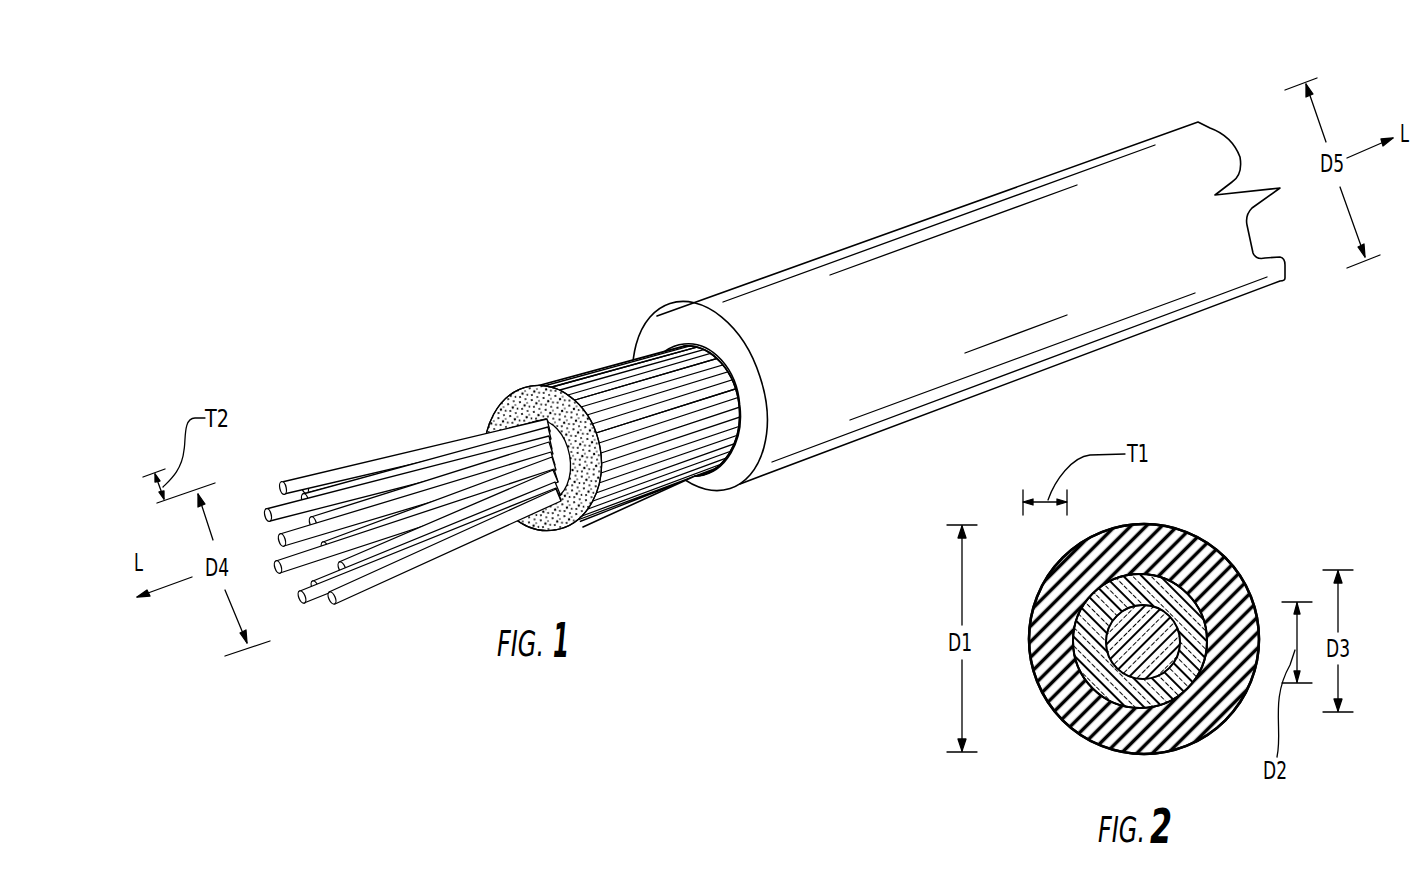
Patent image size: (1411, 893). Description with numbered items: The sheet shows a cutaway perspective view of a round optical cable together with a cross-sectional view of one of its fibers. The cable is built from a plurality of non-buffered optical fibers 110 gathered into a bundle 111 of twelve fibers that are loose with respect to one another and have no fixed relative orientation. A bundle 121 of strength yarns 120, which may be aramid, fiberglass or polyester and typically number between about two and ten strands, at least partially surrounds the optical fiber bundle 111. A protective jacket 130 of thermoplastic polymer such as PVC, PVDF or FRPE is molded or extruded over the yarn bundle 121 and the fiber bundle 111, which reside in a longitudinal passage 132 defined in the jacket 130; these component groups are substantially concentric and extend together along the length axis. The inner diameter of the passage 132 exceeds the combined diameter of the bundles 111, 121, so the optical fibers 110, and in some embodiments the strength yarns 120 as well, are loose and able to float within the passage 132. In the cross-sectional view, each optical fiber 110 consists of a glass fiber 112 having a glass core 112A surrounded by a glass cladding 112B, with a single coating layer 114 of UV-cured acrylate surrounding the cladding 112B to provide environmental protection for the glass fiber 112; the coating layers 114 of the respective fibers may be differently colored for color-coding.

In FIG. 1, the non-buffered optical fiber 110 is at (337, 467).
In FIG. 2, the non-buffered optical fiber 110 is at (1227, 495).
In FIG. 1, the bundle of non-buffered optical fibers 111 is at (365, 433).
In FIG. 2, the glass fiber 112 is at (1185, 577).
In FIG. 2, the glass core 112A is at (1130, 660).
In FIG. 2, the glass cladding 112B is at (1107, 680).
In FIG. 2, the coating layer 114 is at (1175, 538).
In FIG. 1, the strength yarn 120 is at (625, 423).
In FIG. 1, the bundle of strength yarns 121 is at (615, 322).
In FIG. 1, the protective jacket 130 is at (838, 268).
In FIG. 1, the longitudinal passage 132 is at (686, 366).